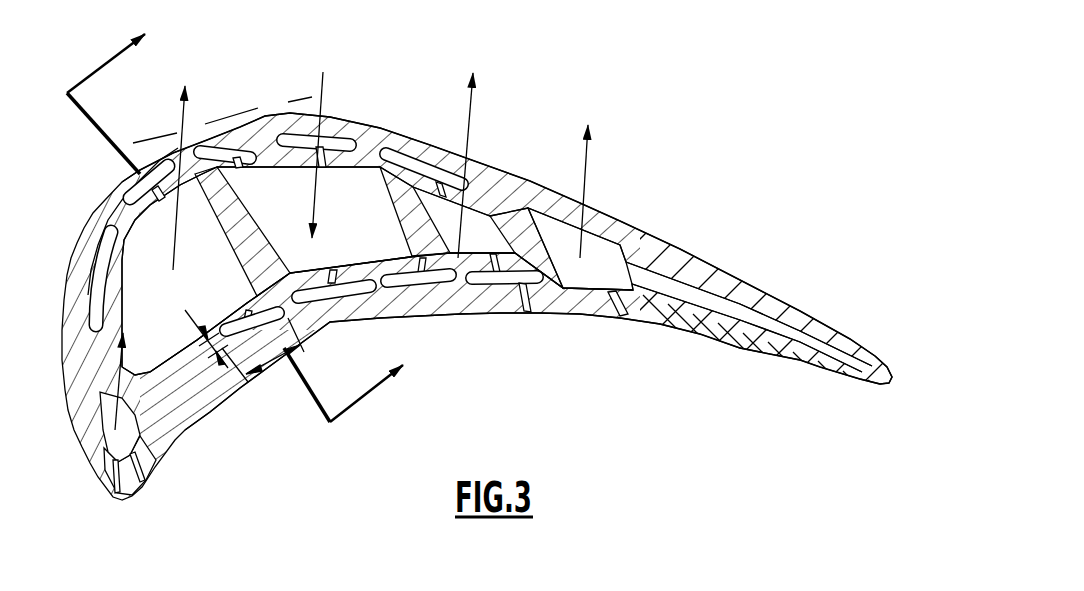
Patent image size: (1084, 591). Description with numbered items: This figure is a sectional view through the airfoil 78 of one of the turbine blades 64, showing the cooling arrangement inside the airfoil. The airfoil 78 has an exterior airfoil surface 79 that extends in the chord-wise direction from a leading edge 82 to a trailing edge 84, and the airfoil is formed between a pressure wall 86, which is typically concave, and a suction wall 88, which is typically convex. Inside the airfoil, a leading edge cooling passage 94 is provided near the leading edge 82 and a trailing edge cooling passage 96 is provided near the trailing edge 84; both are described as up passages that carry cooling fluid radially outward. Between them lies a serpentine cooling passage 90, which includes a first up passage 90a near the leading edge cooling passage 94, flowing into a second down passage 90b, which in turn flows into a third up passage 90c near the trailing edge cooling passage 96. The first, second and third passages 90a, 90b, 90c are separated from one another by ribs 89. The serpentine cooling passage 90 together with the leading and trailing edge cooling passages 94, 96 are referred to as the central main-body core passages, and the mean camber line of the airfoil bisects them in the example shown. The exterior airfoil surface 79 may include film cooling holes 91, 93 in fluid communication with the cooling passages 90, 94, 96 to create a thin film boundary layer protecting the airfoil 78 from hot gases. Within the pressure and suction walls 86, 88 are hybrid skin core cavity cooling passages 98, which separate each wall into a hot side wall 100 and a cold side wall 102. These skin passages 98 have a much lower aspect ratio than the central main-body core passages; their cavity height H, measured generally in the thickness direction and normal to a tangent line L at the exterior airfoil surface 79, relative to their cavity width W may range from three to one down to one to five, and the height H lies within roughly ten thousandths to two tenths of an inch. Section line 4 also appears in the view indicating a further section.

The turbine blade 64 is at (697, 134).
The airfoil 78 is at (703, 336).
The exterior airfoil surface 79 is at (727, 262).
The leading edge 82 is at (120, 502).
The trailing edge 84 is at (893, 380).
The pressure wall 86 is at (467, 295).
The suction wall 88 is at (501, 178).
The rib 89 is at (227, 217).
The serpentine cooling passage 90 is at (350, 180).
The first passage 90a is at (232, 291).
The second passage 90b is at (398, 241).
The third passage 90c is at (510, 251).
The film cooling hole 91 is at (152, 493).
The film cooling hole 93 is at (553, 310).
The leading edge cooling passage 94 is at (128, 440).
The trailing edge cooling passage 96 is at (600, 252).
The hybrid skin core cavity cooling passage 98 is at (410, 160).
The hot side wall 100 is at (320, 312).
The cold side wall 102 is at (300, 283).
The tangent line L is at (277, 106).
The cavity height H is at (187, 333).
The cavity width W is at (273, 365).
The section line 4 is at (245, 212).